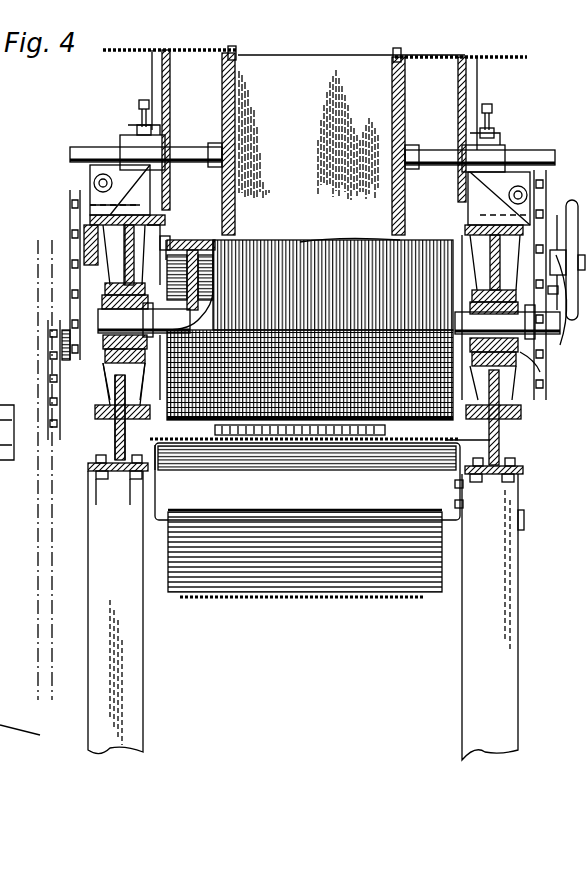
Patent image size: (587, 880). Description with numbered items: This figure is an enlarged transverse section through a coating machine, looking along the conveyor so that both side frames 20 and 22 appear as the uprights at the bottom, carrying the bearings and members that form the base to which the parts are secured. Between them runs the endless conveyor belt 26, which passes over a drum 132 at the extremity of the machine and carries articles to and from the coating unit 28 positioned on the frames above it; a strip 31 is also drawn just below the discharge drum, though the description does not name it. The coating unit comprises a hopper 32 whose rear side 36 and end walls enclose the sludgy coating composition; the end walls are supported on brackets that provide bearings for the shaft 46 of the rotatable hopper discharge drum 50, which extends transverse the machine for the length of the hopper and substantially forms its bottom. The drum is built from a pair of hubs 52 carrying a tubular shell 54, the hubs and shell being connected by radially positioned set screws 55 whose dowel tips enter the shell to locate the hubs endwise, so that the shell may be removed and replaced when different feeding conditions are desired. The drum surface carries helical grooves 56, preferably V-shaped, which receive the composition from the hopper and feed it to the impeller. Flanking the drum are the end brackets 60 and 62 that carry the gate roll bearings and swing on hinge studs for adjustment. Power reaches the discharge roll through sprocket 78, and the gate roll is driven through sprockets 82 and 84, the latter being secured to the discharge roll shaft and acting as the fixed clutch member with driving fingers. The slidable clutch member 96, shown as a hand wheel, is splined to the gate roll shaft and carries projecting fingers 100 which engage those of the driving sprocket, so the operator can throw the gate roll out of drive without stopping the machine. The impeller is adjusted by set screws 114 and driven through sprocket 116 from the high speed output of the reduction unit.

The side frame 20 is at (130, 655).
The side frame 22 is at (495, 575).
The endless conveyor belt 26 is at (498, 447).
The coating unit 28 is at (94, 72).
The ruler strip 31 is at (385, 430).
The hopper 32 is at (453, 104).
The rear side 36 is at (200, 52).
The shaft 46 is at (514, 386).
The hopper discharge drum 50 is at (330, 246).
The hub 52 is at (215, 250).
The tubular shell 54 is at (178, 240).
The set screw 55 is at (170, 235).
The helical groove 56 is at (304, 242).
The end bracket 60 is at (526, 232).
The end bracket 62 is at (94, 228).
The sprocket 78 is at (71, 282).
The sprocket 82 is at (540, 372).
The sprocket 84 is at (548, 180).
The slidable clutch member 96 is at (562, 345).
The projecting finger 100 is at (545, 300).
The set screw 114 is at (48, 345).
The sprocket 116 is at (50, 352).
The drum 132 is at (345, 600).